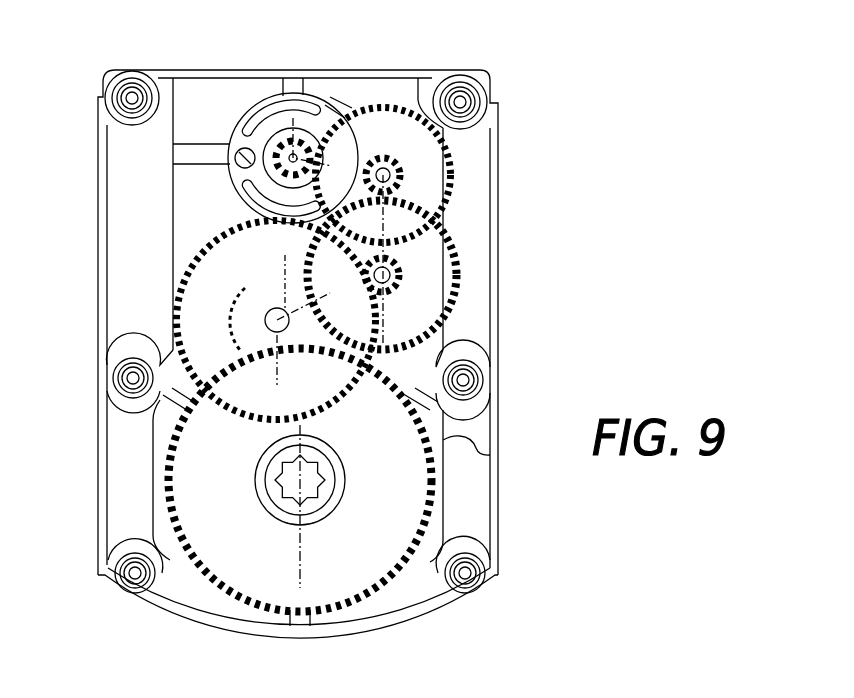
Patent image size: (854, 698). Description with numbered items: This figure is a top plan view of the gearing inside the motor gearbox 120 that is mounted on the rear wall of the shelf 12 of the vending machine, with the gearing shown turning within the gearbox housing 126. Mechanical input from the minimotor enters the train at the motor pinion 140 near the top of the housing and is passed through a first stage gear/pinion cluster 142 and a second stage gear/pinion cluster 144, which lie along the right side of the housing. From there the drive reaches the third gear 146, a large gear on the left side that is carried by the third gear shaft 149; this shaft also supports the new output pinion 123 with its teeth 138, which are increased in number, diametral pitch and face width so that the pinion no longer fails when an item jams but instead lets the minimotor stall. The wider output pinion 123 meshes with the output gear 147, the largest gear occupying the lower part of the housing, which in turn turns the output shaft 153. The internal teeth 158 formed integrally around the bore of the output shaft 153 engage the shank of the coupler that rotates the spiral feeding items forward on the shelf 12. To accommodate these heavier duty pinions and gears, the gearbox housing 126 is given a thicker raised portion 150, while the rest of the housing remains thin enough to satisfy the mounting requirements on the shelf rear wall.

The shelf 12 is at (295, 78).
The motor gearbox 120 is at (547, 347).
The output pinion 123 is at (275, 270).
The gearbox housing 126 is at (499, 209).
The teeth 138 is at (262, 332).
The motor pinion 140 is at (305, 127).
The first stage gear/pinion cluster 142 is at (448, 169).
The second stage gear/pinion cluster 144 is at (455, 273).
The third gear 146 is at (196, 270).
The output gear 147 is at (490, 455).
The third gear shaft 149 is at (266, 329).
The thicker raised portion 150 is at (173, 102).
The output shaft 153 is at (260, 465).
The internal teeth 158 is at (324, 468).